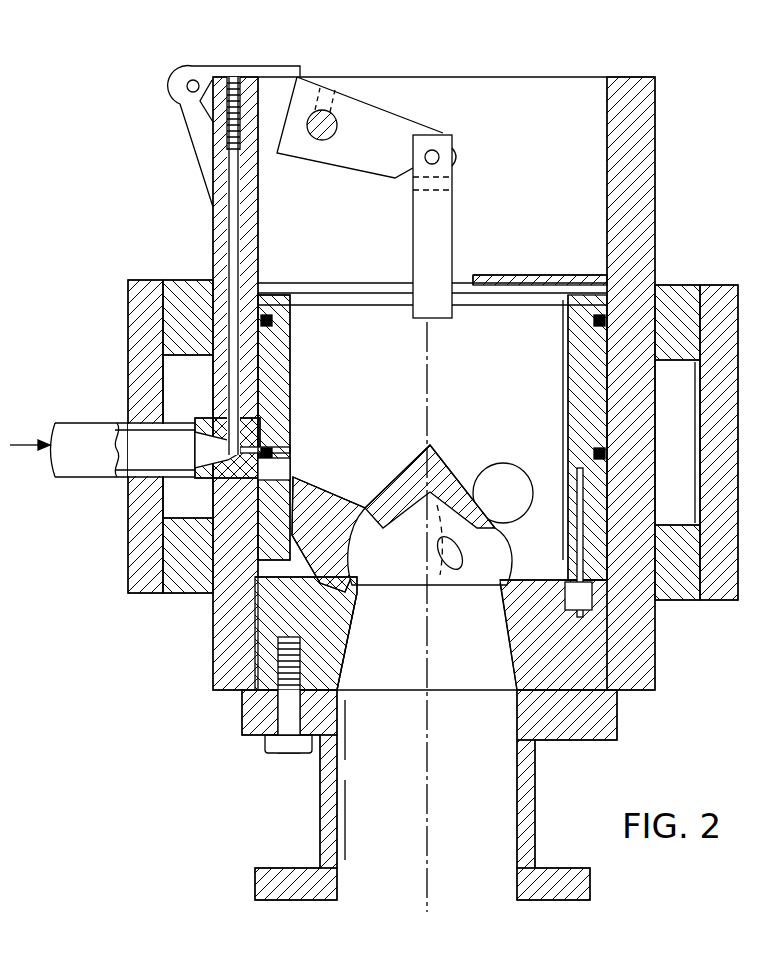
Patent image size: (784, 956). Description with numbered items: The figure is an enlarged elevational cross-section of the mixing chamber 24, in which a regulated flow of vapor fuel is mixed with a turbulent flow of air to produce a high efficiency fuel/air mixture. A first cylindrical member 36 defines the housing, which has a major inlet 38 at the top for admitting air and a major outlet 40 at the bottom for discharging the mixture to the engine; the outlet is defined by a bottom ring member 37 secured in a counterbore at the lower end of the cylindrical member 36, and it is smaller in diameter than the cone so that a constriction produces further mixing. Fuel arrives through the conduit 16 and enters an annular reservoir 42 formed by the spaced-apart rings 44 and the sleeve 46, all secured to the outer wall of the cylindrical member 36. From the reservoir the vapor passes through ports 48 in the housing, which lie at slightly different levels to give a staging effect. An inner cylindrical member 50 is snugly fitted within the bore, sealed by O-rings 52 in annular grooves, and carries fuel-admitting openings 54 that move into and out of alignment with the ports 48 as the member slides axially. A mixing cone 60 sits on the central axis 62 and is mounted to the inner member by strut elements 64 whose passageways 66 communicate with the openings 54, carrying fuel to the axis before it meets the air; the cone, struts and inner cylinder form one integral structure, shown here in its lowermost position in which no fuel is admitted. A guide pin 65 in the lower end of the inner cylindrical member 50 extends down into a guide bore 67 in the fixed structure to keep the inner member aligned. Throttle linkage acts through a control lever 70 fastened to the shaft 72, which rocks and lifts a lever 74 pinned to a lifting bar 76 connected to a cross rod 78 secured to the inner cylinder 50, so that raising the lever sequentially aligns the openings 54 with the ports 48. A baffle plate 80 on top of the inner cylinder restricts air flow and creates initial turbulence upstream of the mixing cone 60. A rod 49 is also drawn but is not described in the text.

The conduit 16 is at (90, 470).
The mixing chamber 24 is at (680, 82).
The first cylindrical member 36 is at (657, 257).
The bottom ring member 37 is at (262, 612).
The major inlet 38 is at (490, 76).
The major outlet 40 is at (498, 672).
The annular reservoir 42 is at (172, 371).
The rings 44 is at (180, 290).
The sleeve 46 is at (728, 509).
The ports 48 is at (200, 480).
The adjusting rod 49 is at (233, 216).
The inner cylindrical member 50 is at (292, 378).
The O-rings 52 is at (273, 322).
The fuel-admitting openings 54 is at (287, 463).
The mixing cone 60 is at (448, 462).
The central axis 62 is at (430, 810).
The strut elements 64 is at (322, 477).
The guide pin 65 is at (585, 520).
The passageways 66 is at (345, 497).
The guide bore 67 is at (585, 673).
The control lever 70 is at (201, 63).
The shaft 72 is at (318, 142).
The lever 74 is at (383, 113).
The lifting bar 76 is at (445, 236).
The cross rod 78 is at (336, 293).
The baffle plate 80 is at (540, 279).